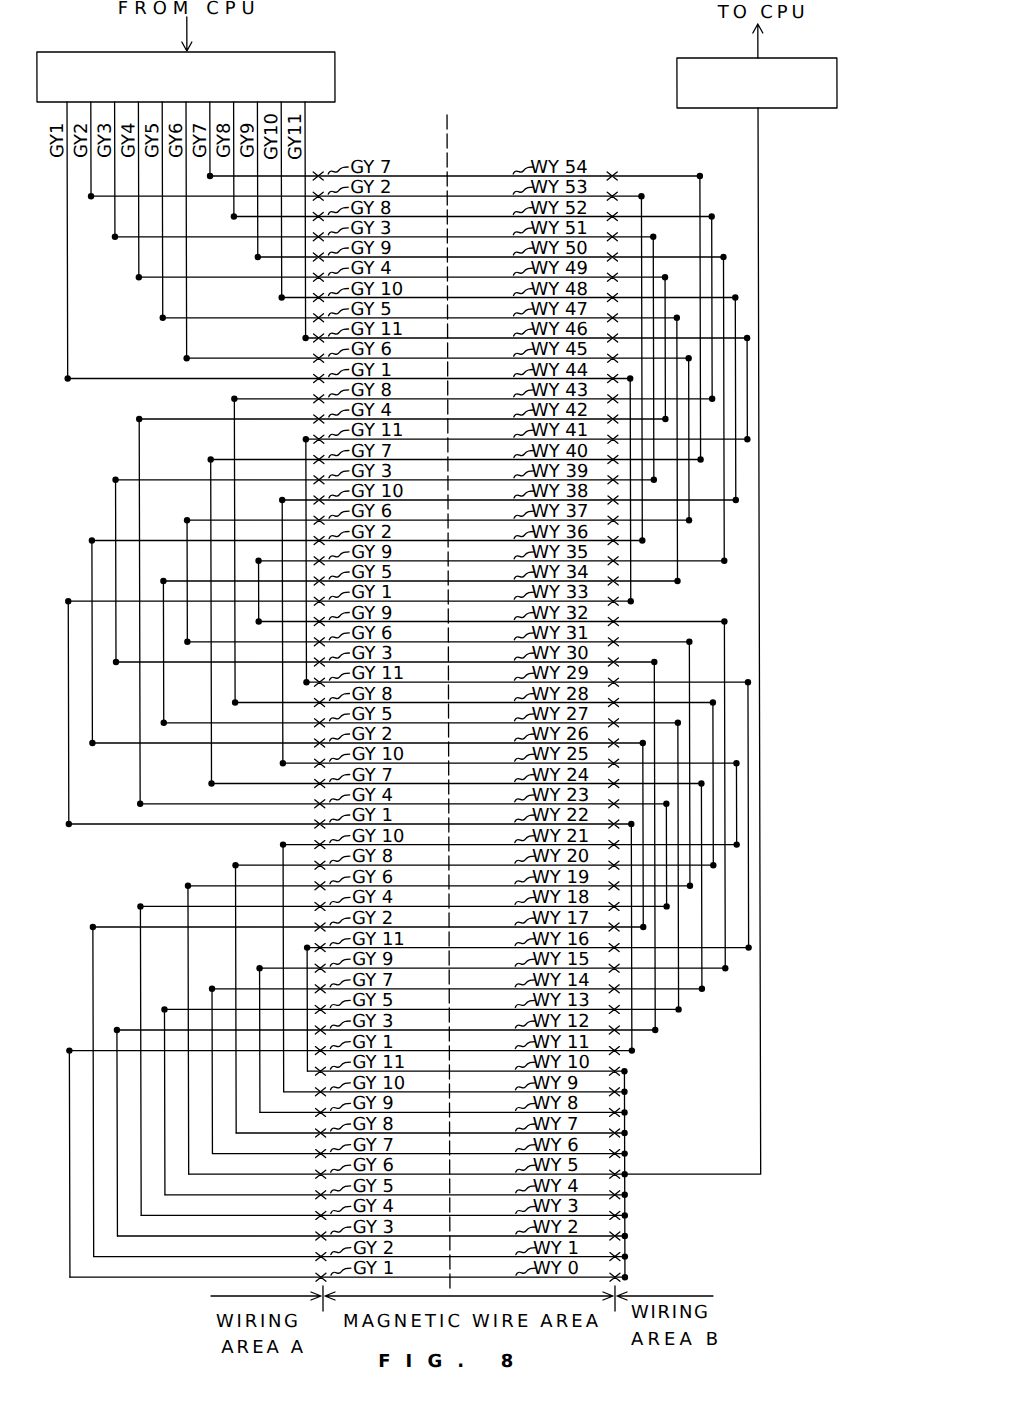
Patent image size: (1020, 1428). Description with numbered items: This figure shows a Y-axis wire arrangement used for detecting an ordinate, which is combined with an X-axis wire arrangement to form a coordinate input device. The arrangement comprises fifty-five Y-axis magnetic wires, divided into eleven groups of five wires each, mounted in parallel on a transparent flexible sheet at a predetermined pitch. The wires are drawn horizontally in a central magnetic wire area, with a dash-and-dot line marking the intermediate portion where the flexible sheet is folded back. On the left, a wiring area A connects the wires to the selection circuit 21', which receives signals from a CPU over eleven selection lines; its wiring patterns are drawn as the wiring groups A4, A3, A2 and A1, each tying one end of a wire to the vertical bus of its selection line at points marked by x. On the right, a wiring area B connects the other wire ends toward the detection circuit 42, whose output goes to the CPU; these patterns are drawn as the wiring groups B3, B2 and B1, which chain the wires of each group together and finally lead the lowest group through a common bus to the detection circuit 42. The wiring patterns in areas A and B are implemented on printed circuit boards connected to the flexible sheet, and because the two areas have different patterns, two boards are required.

The selection circuit 21' is at (219, 77).
The detection circuit 42 is at (677, 90).
The wiring group A1 is at (170, 1061).
The wiring group A2 is at (168, 591).
The wiring group A3 is at (96, 575).
The wiring group A4 is at (167, 240).
The wiring group B1 is at (628, 1205).
The wiring group B2 is at (635, 1051).
The wiring group B3 is at (706, 641).